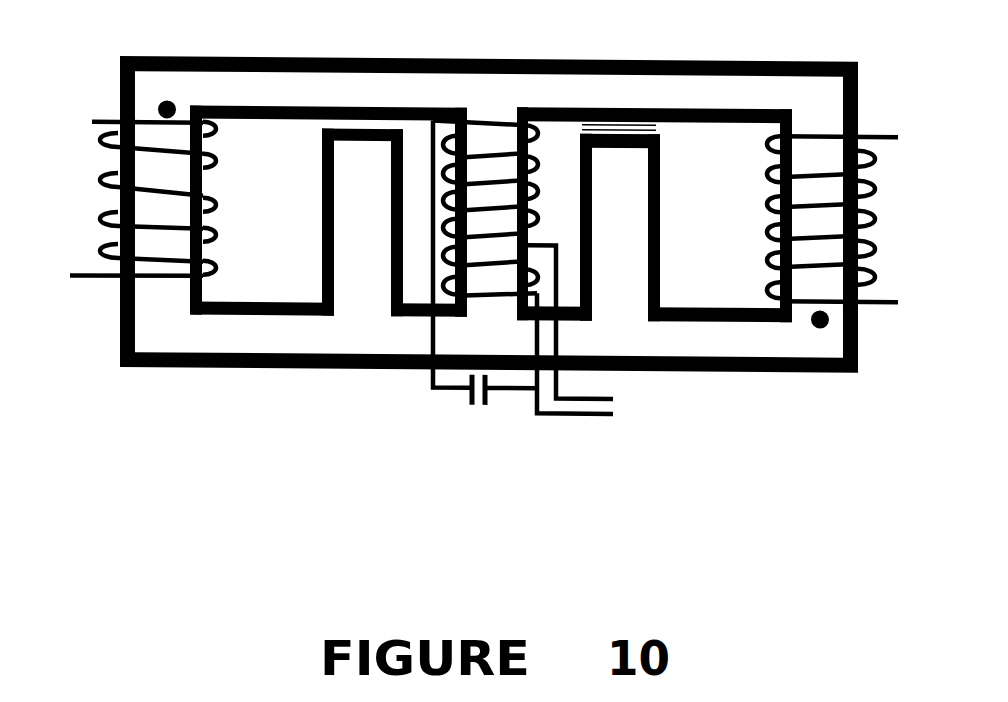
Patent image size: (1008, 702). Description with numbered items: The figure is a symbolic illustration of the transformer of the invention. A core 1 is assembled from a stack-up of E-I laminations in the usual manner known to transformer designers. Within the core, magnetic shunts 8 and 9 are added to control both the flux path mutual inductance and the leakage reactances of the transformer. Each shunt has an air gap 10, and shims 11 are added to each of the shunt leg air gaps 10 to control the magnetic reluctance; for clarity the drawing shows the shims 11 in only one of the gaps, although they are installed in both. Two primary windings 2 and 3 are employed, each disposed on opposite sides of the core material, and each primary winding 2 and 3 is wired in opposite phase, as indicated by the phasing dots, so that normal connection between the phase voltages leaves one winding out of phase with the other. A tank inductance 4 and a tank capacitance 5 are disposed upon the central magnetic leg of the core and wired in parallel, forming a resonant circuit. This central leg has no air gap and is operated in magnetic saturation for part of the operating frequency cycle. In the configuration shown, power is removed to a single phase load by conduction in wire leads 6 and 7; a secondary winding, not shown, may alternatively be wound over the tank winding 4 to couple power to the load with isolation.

The core 1 is at (782, 98).
The primary winding 2 is at (106, 184).
The primary winding 3 is at (874, 184).
The tank inductance 4 is at (492, 122).
The tank capacitance 5 is at (472, 415).
The wire lead 6 is at (622, 395).
The wire lead 7 is at (622, 415).
The magnetic shunt 8 is at (654, 168).
The magnetic shunt 9 is at (328, 162).
The air gap 10 is at (336, 127).
The shims 11 is at (652, 126).